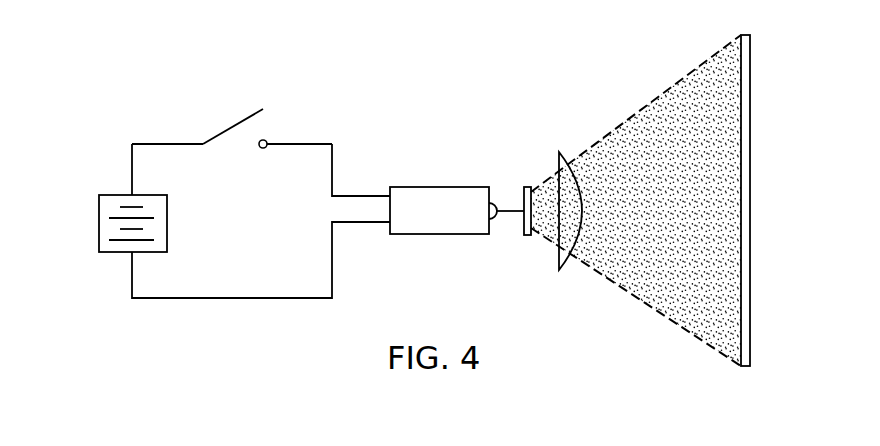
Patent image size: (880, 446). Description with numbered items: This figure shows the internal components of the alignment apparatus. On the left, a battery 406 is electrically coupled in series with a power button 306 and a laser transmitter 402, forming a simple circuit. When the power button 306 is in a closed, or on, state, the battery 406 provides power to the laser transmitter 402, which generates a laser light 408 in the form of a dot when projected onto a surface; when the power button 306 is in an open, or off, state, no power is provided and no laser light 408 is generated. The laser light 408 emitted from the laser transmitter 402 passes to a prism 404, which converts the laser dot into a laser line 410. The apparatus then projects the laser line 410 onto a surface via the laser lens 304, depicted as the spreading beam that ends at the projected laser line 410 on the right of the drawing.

The laser lens 304 is at (559, 152).
The power button 306 is at (230, 128).
The laser transmitter 402 is at (437, 187).
The prism 404 is at (527, 236).
The battery 406 is at (99, 212).
The laser light 408 is at (507, 213).
The laser line 410 is at (750, 180).